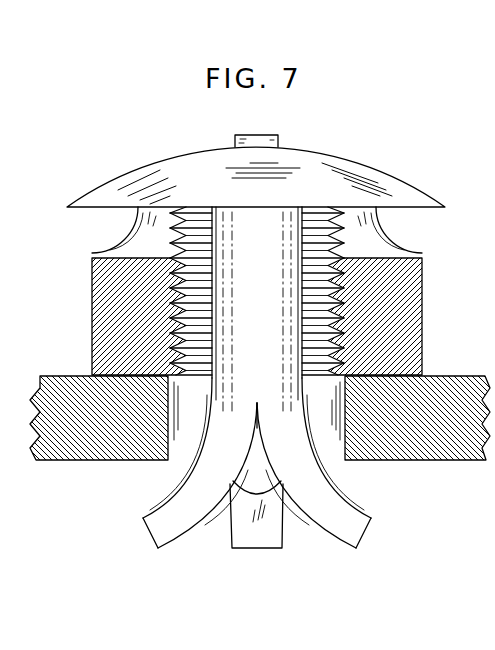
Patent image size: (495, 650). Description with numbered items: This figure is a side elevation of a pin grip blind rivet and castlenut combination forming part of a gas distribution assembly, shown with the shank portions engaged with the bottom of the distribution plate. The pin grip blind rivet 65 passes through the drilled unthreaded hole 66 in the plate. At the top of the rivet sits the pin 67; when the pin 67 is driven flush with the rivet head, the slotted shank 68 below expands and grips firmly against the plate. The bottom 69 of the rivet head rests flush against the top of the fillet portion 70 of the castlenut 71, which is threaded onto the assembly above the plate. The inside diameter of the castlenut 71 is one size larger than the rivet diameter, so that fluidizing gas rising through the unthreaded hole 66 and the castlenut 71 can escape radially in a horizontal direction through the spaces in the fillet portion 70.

The pin grip blind rivet 65 is at (366, 166).
The drilled unthreaded hole 66 is at (185, 432).
The pin 67 is at (257, 135).
The slotted shank 68 is at (186, 520).
The bottom of the rivet head 69 is at (95, 207).
The fillet portion 70 is at (366, 230).
The castlenut 71 is at (421, 290).